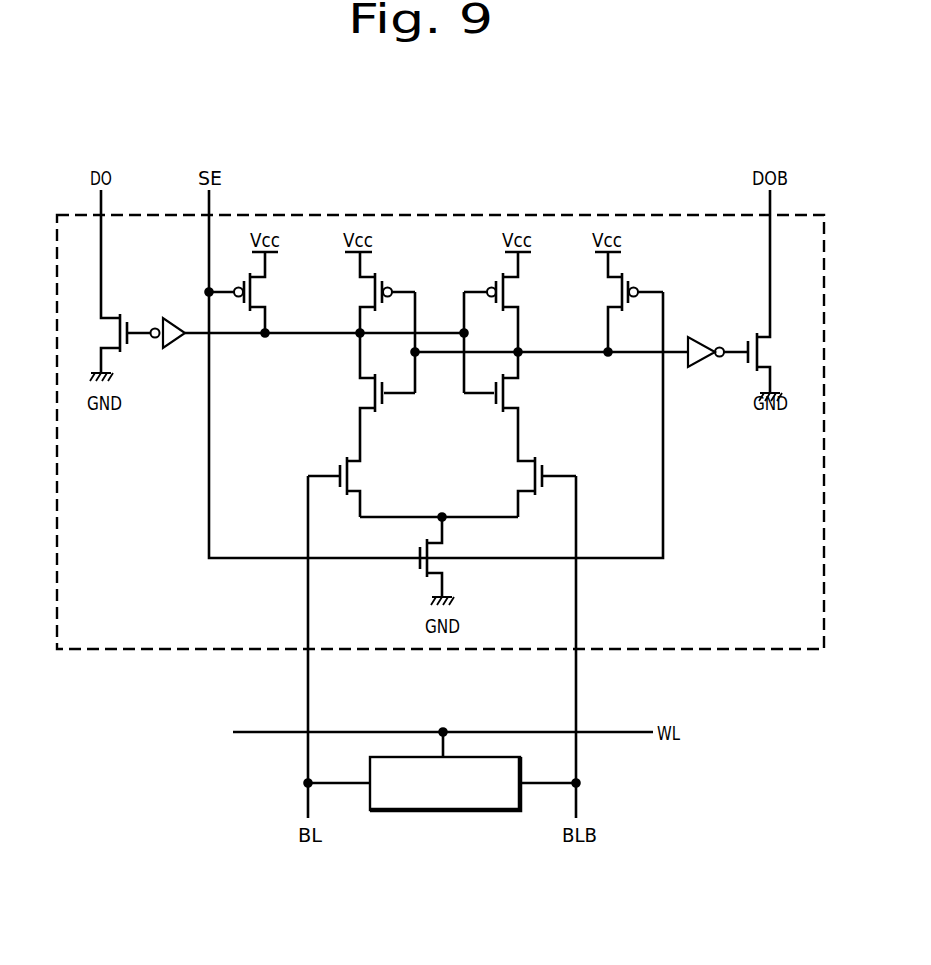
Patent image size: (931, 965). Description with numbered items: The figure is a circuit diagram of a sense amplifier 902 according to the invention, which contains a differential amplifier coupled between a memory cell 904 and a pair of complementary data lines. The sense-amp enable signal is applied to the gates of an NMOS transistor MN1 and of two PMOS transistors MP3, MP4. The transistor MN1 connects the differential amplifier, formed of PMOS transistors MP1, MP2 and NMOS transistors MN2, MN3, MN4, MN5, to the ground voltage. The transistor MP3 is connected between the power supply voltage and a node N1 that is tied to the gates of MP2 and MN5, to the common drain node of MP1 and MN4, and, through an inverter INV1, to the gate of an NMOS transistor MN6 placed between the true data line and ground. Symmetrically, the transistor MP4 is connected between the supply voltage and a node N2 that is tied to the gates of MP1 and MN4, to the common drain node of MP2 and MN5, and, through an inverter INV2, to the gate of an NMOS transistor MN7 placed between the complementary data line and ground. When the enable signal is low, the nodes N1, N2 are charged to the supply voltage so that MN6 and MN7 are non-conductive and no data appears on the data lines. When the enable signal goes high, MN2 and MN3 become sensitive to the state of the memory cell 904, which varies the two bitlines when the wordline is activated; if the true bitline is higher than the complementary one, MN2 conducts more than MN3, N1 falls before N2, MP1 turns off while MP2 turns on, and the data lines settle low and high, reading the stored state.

The sense amplifier circuit 902 is at (473, 213).
The memory cell 904 is at (483, 811).
The inverter INV1 is at (172, 349).
The inverter INV2 is at (703, 368).
The PMOS transistor MP1 is at (369, 315).
The PMOS transistor MP2 is at (508, 315).
The PMOS transistor MP3 is at (253, 292).
The PMOS transistor MP4 is at (617, 302).
The NMOS transistor MN1 is at (450, 561).
The NMOS transistor MN2 is at (351, 487).
The NMOS transistor MN3 is at (529, 487).
The NMOS transistor MN4 is at (370, 417).
The NMOS transistor MN5 is at (508, 417).
The NMOS transistor MN6 is at (109, 285).
The NMOS transistor MN7 is at (765, 295).
The node N1 is at (324, 348).
The node N2 is at (550, 366).